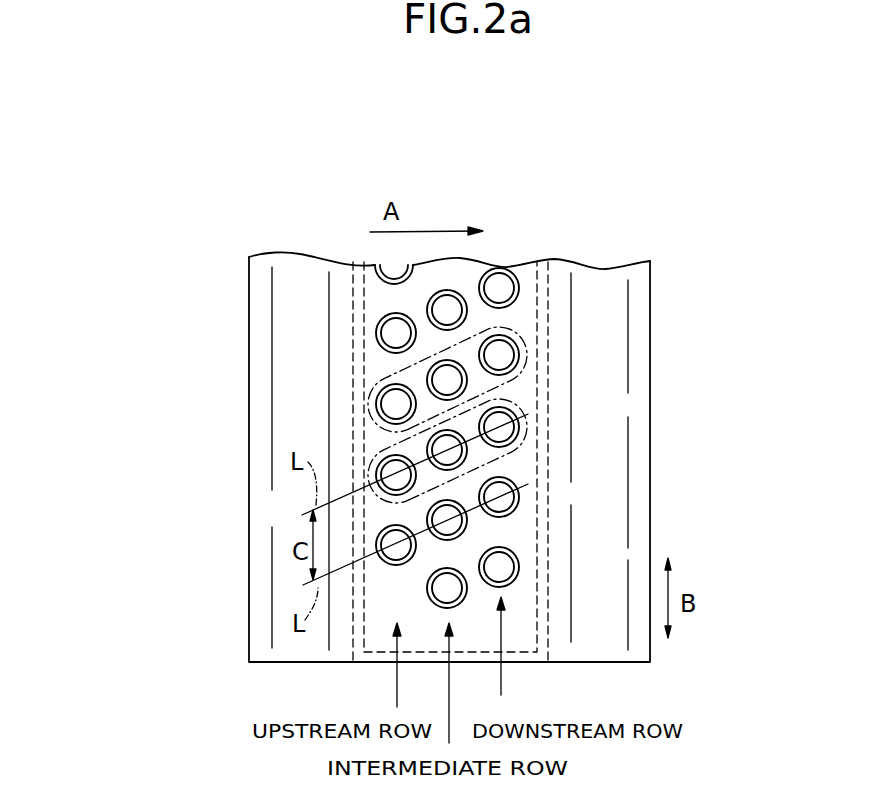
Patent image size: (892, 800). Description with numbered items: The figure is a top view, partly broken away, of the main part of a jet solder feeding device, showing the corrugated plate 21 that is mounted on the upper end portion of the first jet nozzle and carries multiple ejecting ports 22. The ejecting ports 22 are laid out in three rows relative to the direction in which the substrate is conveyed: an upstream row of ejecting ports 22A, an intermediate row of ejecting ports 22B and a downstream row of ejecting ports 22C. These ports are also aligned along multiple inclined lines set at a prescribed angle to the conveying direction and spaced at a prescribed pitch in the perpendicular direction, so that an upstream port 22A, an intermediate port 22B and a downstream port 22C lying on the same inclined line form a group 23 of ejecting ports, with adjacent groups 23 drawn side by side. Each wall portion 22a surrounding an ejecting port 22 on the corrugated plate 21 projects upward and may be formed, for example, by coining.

The corrugated plate 21 is at (282, 310).
The ejecting ports 22 is at (455, 438).
The upstream row of ejecting ports 22A is at (393, 405).
The intermediate row of ejecting ports 22B is at (449, 381).
The downstream row of ejecting ports 22C is at (501, 355).
The wall portion 22a is at (520, 565).
The group of ejecting ports 23 is at (510, 330).